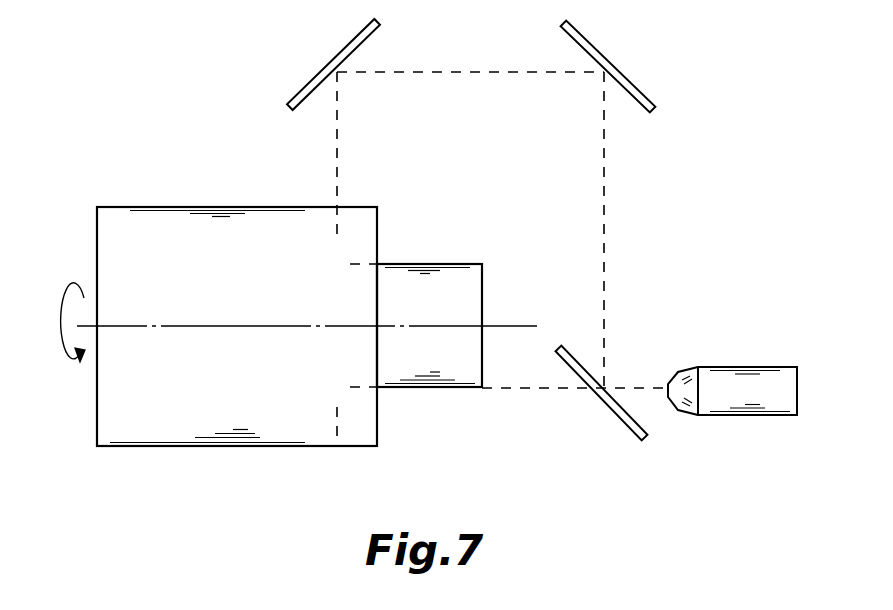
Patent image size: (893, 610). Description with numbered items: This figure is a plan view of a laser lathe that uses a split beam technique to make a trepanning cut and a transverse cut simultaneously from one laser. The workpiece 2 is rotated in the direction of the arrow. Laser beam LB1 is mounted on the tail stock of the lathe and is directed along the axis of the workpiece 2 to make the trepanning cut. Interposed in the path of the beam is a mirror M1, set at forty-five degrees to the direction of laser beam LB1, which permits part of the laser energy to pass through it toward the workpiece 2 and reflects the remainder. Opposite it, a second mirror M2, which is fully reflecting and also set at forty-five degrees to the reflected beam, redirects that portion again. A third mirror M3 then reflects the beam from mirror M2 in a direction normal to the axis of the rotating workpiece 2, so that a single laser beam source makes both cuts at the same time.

The workpiece 2 is at (247, 308).
The mirror M1 is at (612, 414).
The second mirror M2 is at (633, 80).
The third mirror M3 is at (342, 50).
The laser beam LB1 is at (753, 378).